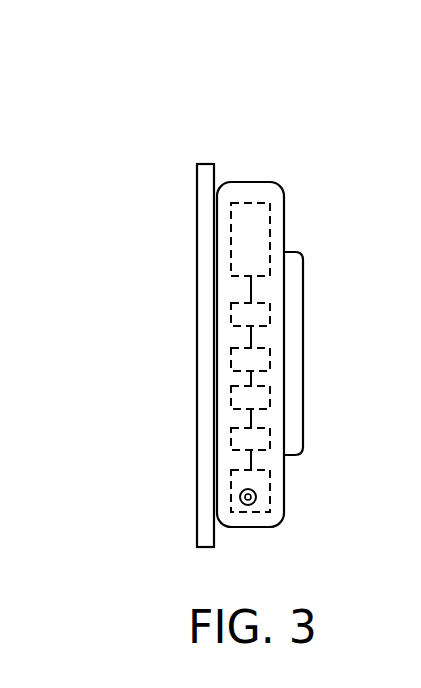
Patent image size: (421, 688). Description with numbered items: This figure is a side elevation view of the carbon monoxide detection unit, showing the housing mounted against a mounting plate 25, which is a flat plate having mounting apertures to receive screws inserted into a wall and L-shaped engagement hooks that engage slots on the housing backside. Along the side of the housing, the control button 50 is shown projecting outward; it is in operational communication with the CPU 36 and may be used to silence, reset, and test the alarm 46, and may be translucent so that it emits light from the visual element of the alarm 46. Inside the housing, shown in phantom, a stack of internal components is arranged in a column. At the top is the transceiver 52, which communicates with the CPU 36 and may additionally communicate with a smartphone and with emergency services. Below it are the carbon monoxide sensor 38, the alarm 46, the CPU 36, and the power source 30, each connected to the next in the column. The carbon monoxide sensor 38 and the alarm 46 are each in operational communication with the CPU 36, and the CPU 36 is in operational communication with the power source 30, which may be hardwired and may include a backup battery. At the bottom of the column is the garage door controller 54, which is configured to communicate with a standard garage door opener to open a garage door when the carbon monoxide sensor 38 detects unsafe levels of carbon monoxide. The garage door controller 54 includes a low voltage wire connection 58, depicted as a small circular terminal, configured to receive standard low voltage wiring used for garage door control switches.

The mounting plate 25 is at (205, 167).
The control button 50 is at (295, 372).
The transceiver 52 is at (235, 227).
The carbon monoxide sensor 38 is at (235, 312).
The alarm 46 is at (235, 358).
The CPU 36 is at (235, 398).
The power source 30 is at (235, 438).
The garage door controller 54 is at (233, 484).
The low voltage wire connection 58 is at (257, 497).